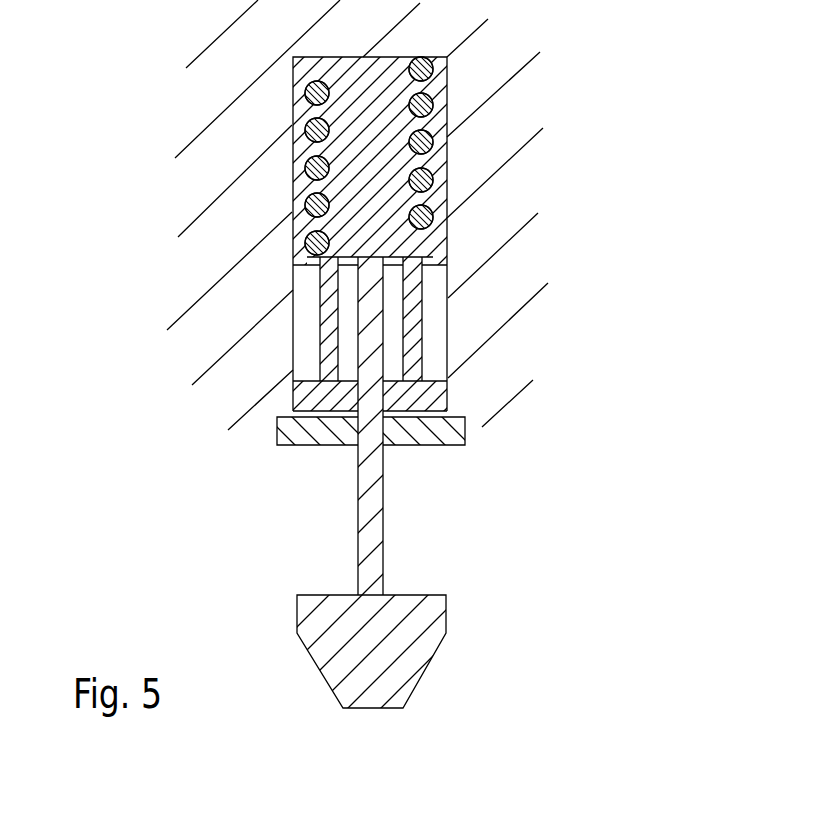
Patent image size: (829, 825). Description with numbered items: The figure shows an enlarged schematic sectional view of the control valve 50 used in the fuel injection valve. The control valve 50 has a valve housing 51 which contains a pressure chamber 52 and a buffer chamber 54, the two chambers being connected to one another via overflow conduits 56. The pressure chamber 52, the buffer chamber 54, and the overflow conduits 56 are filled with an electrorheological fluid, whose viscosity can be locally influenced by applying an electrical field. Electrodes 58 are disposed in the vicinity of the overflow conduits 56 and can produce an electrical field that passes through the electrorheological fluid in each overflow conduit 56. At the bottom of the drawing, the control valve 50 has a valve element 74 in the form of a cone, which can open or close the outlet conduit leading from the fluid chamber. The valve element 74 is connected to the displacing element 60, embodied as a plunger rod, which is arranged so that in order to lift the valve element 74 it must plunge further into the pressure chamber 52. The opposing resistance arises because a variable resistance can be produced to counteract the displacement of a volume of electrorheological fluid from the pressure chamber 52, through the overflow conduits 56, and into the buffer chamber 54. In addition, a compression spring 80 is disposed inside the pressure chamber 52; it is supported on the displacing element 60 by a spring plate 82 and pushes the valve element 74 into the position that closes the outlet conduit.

The control valve 50 is at (632, 194).
The valve housing 51 is at (518, 221).
The pressure chamber 52 is at (405, 88).
The buffer chamber 54 is at (302, 395).
The overflow conduits 56 is at (328, 311).
The electrodes 58 is at (347, 355).
The displacing element 60 is at (367, 283).
The valve element 74 is at (407, 655).
The compression spring 80 is at (418, 140).
The spring plate 82 is at (428, 254).